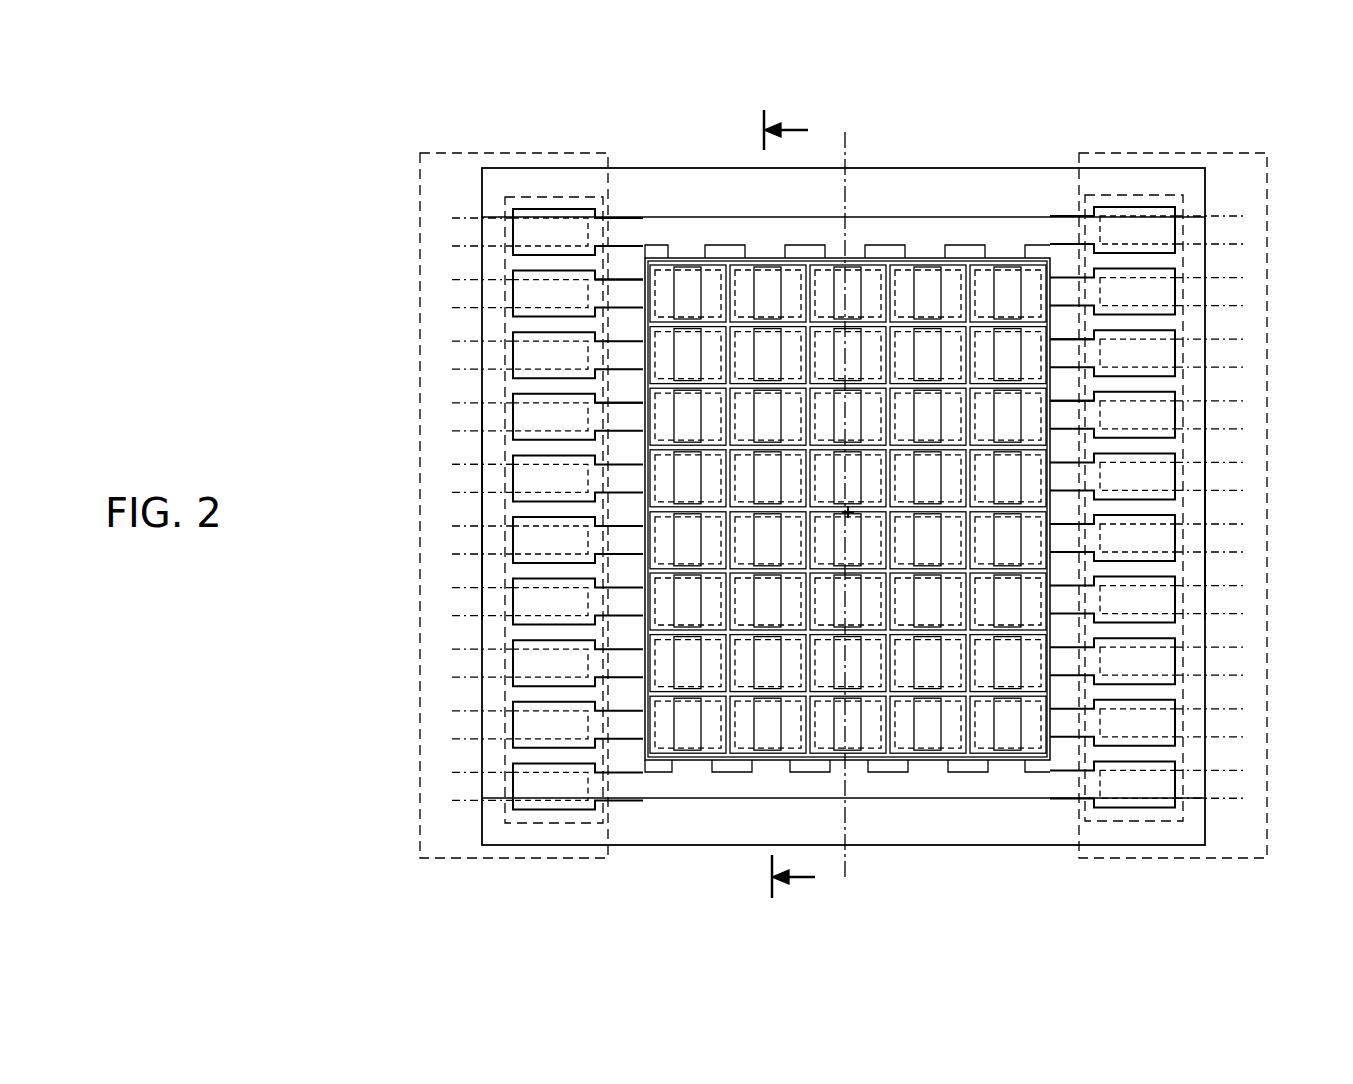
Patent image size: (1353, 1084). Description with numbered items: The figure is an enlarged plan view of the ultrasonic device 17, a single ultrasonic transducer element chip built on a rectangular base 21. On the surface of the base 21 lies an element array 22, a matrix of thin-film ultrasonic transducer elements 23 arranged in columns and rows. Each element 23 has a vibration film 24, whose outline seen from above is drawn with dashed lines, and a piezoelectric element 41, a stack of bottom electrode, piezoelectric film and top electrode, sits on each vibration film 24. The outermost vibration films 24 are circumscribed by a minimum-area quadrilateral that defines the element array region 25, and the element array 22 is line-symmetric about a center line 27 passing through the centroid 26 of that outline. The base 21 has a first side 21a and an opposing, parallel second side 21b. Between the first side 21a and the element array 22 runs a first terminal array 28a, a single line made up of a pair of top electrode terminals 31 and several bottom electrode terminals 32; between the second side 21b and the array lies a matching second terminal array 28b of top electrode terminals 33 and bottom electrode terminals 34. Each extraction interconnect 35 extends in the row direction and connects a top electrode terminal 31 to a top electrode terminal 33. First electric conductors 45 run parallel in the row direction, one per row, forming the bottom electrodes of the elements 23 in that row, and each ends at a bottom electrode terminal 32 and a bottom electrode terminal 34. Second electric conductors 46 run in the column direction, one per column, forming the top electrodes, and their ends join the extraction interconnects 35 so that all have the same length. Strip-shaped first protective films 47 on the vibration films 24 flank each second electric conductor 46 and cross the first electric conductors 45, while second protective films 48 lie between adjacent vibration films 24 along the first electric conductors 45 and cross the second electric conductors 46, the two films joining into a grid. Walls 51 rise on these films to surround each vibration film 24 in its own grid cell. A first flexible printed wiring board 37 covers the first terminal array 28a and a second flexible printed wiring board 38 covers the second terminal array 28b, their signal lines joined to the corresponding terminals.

The ultrasonic device 17 is at (706, 156).
The base 21 is at (912, 182).
The first side 21a is at (482, 506).
The second side 21b is at (1205, 504).
The element array 22 is at (648, 265).
The ultrasonic transducer element 23 is at (698, 253).
The vibration film 24 is at (640, 289).
The element array region 25 is at (640, 381).
The centroid 26 is at (843, 518).
The center line 27 is at (705, 292).
The first terminal array 28a is at (500, 463).
The second terminal array 28b is at (1190, 800).
The top electrode terminal 31 is at (518, 214).
The bottom electrode terminal 32 is at (522, 282).
The top electrode terminal 33 is at (1125, 208).
The bottom electrode terminal 34 is at (1177, 290).
The extraction interconnect 35 is at (960, 217).
The first flexible printed wiring board 37 is at (451, 153).
The second flexible printed wiring board 38 is at (1188, 153).
The piezoelectric element 41 is at (678, 252).
The first electric conductor 45 is at (1058, 286).
The second electric conductor 46 is at (665, 772).
The first protective film 47 is at (665, 745).
The second protective film 48 is at (855, 262).
The wall 51 is at (685, 290).